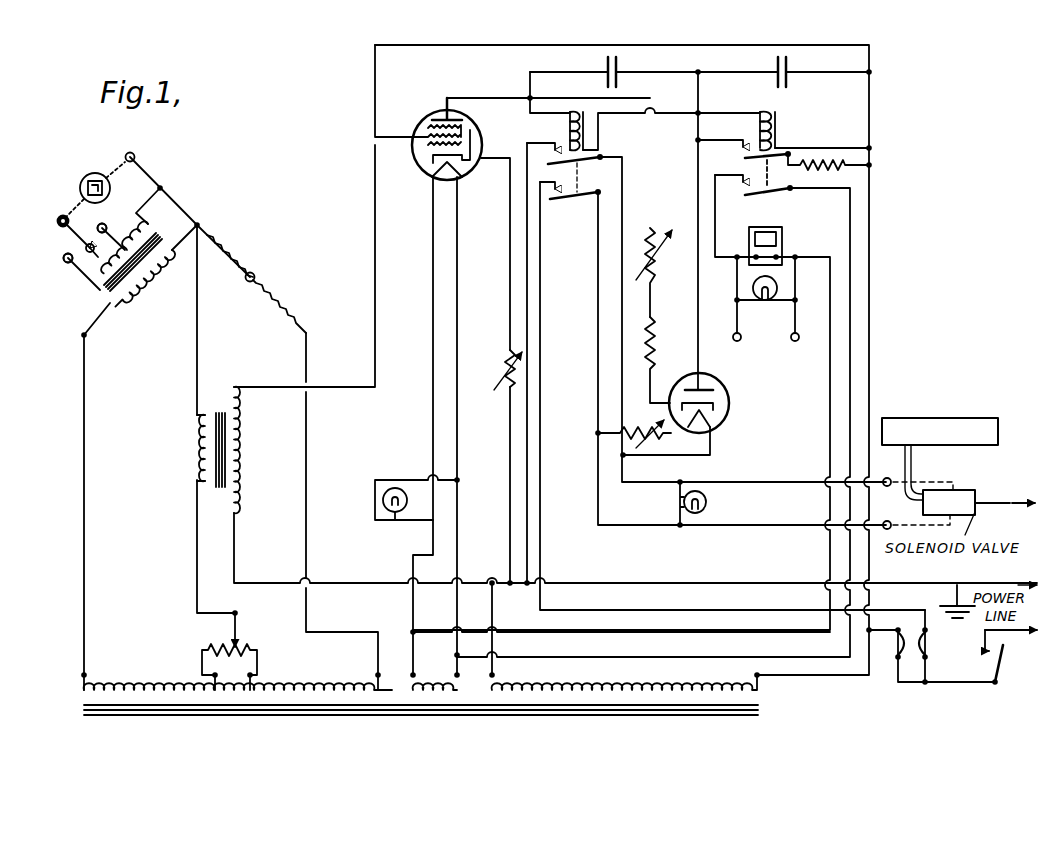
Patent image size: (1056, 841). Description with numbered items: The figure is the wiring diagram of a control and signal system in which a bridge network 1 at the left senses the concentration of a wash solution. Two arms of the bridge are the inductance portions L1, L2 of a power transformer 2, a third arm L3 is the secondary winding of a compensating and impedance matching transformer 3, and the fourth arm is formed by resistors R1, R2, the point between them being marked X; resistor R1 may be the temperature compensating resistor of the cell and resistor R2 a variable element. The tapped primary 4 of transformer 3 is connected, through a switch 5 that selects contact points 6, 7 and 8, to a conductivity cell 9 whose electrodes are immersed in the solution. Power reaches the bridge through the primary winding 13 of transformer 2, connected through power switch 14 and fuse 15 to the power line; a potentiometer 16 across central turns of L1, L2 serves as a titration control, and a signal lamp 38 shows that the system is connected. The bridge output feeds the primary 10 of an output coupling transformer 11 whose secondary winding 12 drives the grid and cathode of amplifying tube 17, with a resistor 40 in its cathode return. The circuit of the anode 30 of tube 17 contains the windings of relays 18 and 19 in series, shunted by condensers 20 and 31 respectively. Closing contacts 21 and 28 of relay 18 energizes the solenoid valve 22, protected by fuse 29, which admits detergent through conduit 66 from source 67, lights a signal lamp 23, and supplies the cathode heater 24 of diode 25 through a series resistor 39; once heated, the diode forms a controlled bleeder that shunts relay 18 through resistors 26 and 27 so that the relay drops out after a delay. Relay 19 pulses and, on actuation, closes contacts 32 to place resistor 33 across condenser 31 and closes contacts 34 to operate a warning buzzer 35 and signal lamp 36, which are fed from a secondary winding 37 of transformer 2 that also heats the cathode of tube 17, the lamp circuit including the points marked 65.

The bridge network 1 is at (152, 460).
The power transformer 2 is at (401, 690).
The compensating and impedance matching transformer 3 is at (99, 290).
The primary 4 is at (146, 230).
The switch 5 is at (58, 224).
The contact point 6 is at (63, 258).
The contact point 7 is at (106, 264).
The contact point 8 is at (93, 212).
The conductivity cell 9 is at (96, 172).
The inductance portion L1 is at (168, 685).
The inductance portion L2 is at (344, 685).
The secondary winding L3 is at (140, 283).
The resistor R1 is at (236, 258).
The resistor R2 is at (272, 292).
The tap point X is at (247, 282).
The primary 10 is at (201, 432).
The output coupling transformer 11 is at (220, 410).
The secondary winding 12 is at (244, 430).
The primary winding 13 is at (636, 688).
The power switch 14 is at (996, 676).
The fuse 15 is at (900, 645).
The potentiometer 16 is at (252, 650).
The amplifying tube 17 is at (430, 120).
The relay 18 is at (566, 124).
The relay 19 is at (780, 132).
The condenser 20 is at (618, 70).
The contacts 21 is at (545, 161).
The solenoid valve 22 is at (958, 498).
The signal lamp 23 is at (708, 502).
The cathode heater 24 is at (718, 428).
The diode 25 is at (726, 393).
The resistor 26 is at (656, 332).
The variable resistor 27 is at (656, 270).
The contacts 28 is at (553, 202).
The fuse 29 is at (930, 645).
The anode 30 is at (463, 118).
The condenser 31 is at (788, 70).
The contacts 32 is at (745, 155).
The resistor 33 is at (815, 170).
The contacts 34 is at (745, 196).
The warning buzzer 35 is at (782, 243).
The signal lamp 36 is at (772, 302).
The secondary winding 37 is at (440, 688).
The signal lamp 38 is at (405, 489).
The series resistor 39 is at (645, 436).
The resistor 40 is at (500, 362).
The terminals 65 is at (792, 340).
The conduit 66 is at (912, 462).
The source 67 is at (958, 418).